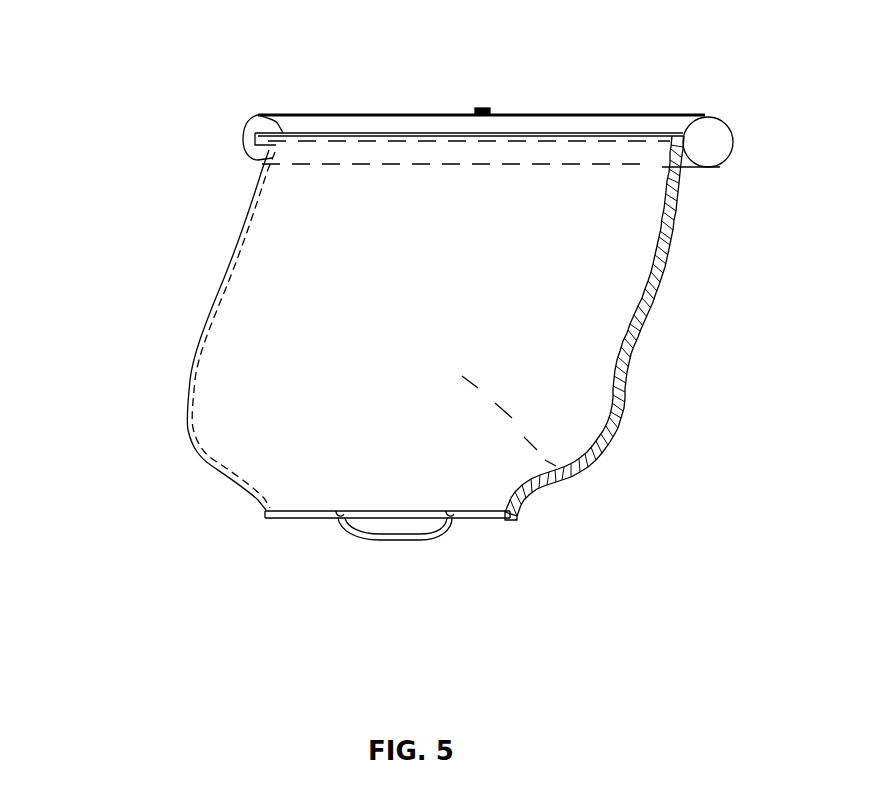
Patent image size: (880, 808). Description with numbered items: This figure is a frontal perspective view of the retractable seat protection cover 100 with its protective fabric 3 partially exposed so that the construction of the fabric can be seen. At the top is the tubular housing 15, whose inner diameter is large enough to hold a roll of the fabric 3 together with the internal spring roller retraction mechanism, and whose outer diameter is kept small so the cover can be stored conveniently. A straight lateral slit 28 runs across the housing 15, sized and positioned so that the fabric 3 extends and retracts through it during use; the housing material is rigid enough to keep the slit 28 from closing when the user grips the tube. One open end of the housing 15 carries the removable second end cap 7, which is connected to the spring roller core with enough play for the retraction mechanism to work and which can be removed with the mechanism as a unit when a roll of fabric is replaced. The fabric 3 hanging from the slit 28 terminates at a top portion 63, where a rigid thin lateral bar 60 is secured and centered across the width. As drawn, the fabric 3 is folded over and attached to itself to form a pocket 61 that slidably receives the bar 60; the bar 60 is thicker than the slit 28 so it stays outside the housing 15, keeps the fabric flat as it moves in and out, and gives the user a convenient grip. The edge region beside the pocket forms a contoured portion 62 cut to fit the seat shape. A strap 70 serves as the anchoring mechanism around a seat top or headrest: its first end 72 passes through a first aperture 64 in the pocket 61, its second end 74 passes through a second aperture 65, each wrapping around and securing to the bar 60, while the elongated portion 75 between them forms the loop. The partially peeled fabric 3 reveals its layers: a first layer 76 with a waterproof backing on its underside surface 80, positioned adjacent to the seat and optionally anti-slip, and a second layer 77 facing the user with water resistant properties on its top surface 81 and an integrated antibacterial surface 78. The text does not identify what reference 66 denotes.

The retractable seat protection cover 100 is at (133, 88).
The housing 15 is at (582, 115).
The slit 28 is at (258, 115).
The second end cap 7 is at (730, 137).
The side wall 66 is at (258, 182).
The protective fabric 3 is at (290, 336).
The top portion of the fabric 63 is at (258, 500).
The bar 60 is at (300, 522).
The strap 70 is at (392, 545).
The first aperture 64 is at (340, 510).
The second aperture 65 is at (442, 510).
The first end 72 is at (333, 524).
The elongated portion 75 is at (362, 540).
The second end 74 is at (455, 528).
The first layer 76 is at (668, 260).
The second layer 77 is at (642, 272).
The top surface 81 is at (553, 316).
The antibacterial surface 78 is at (585, 409).
The underside surface 80 is at (568, 482).
The contoured portion 62 is at (540, 488).
The pocket 61 is at (523, 517).